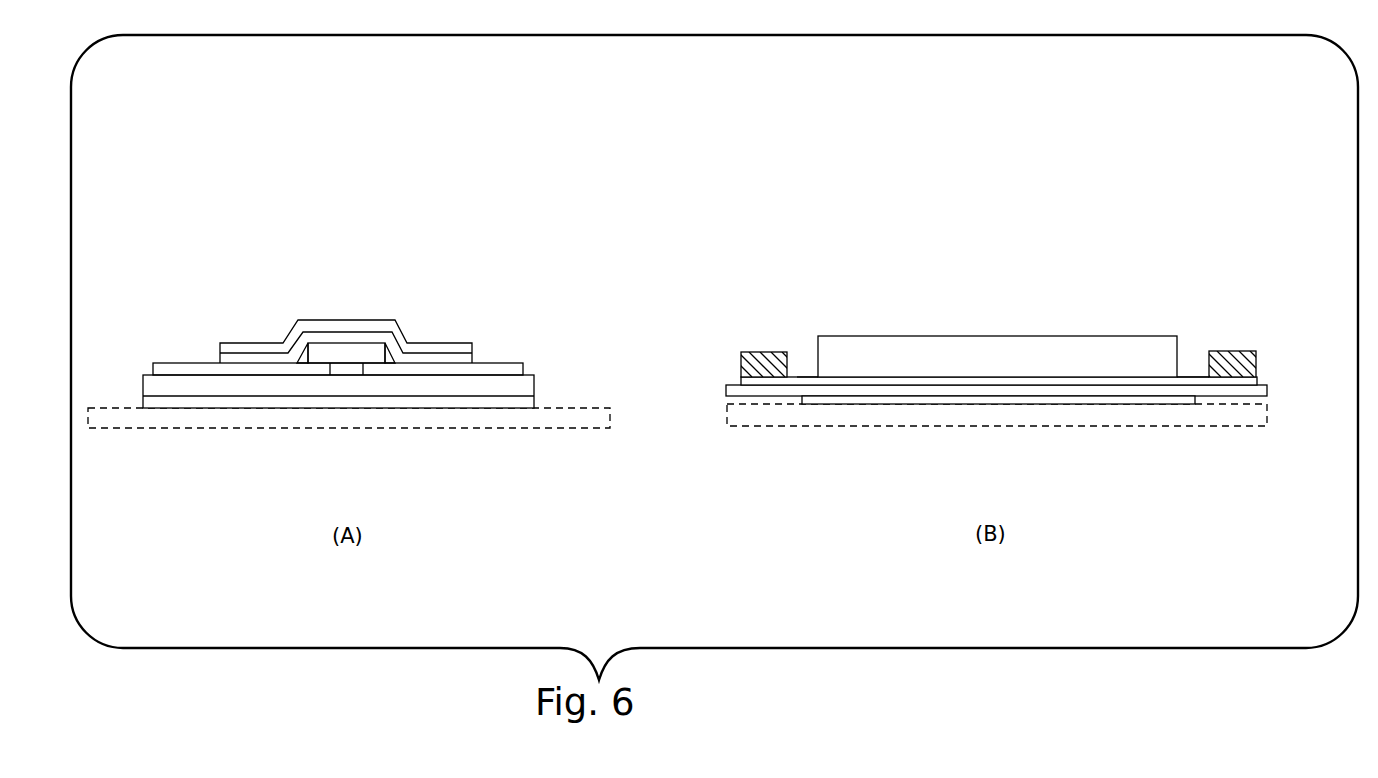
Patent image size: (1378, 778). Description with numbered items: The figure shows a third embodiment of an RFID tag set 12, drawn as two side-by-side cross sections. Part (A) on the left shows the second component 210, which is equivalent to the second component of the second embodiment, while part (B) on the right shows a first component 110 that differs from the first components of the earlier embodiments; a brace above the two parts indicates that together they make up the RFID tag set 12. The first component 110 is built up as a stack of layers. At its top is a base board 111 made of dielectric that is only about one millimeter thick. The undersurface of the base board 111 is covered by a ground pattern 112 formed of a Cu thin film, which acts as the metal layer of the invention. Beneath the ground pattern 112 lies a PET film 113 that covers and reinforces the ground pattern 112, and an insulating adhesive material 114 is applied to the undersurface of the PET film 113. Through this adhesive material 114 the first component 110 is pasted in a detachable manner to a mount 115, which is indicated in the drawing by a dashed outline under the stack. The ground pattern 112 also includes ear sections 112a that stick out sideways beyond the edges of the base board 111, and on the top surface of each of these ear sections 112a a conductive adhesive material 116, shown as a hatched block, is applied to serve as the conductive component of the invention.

The RFID tag set 12 is at (448, 180).
The second component 210 is at (428, 276).
The first component 110 is at (948, 258).
The base board 111 is at (1112, 352).
The ground pattern 112 is at (1022, 379).
The ear sections 112a is at (797, 382).
The PET film 113 is at (1268, 388).
The insulating adhesive material 114 is at (1158, 400).
The mount 115 is at (1093, 426).
The conductive adhesive material 116 is at (758, 352).